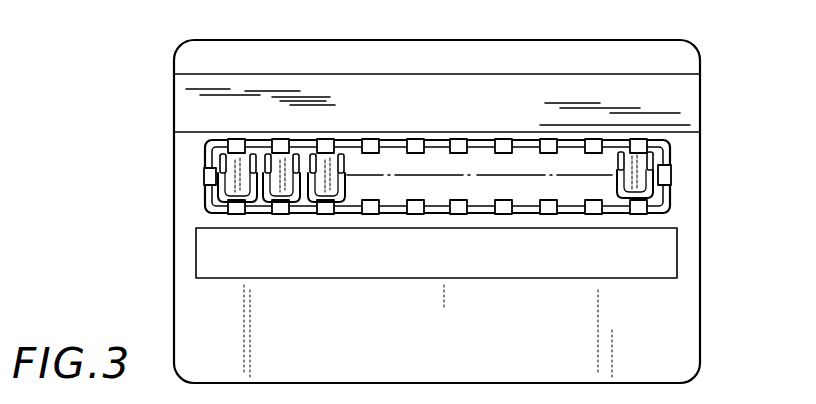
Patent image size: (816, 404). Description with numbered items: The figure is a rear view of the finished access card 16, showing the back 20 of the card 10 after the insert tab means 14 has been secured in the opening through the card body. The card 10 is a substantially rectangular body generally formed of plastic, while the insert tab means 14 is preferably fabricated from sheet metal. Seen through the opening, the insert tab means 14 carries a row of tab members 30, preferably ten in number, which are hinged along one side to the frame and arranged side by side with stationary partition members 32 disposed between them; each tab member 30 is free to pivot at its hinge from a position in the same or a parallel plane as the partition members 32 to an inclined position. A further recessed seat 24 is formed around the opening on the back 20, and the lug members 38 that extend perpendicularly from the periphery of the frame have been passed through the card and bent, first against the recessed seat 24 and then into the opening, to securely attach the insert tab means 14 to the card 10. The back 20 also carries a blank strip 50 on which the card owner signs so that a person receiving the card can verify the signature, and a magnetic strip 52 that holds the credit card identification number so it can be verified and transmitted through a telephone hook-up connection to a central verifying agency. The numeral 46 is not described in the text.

The card 10 is at (181, 214).
The insert tab means 14 is at (647, 171).
The access card 16 is at (625, 26).
The back 20 is at (392, 338).
The recessed seat 24 is at (204, 146).
The tab members 30 is at (238, 176).
The partition members 32 is at (213, 212).
The lug members 38 is at (207, 178).
The edge 46 is at (200, 0).
The blank strip 50 is at (203, 262).
The magnetic strip 52 is at (196, 98).